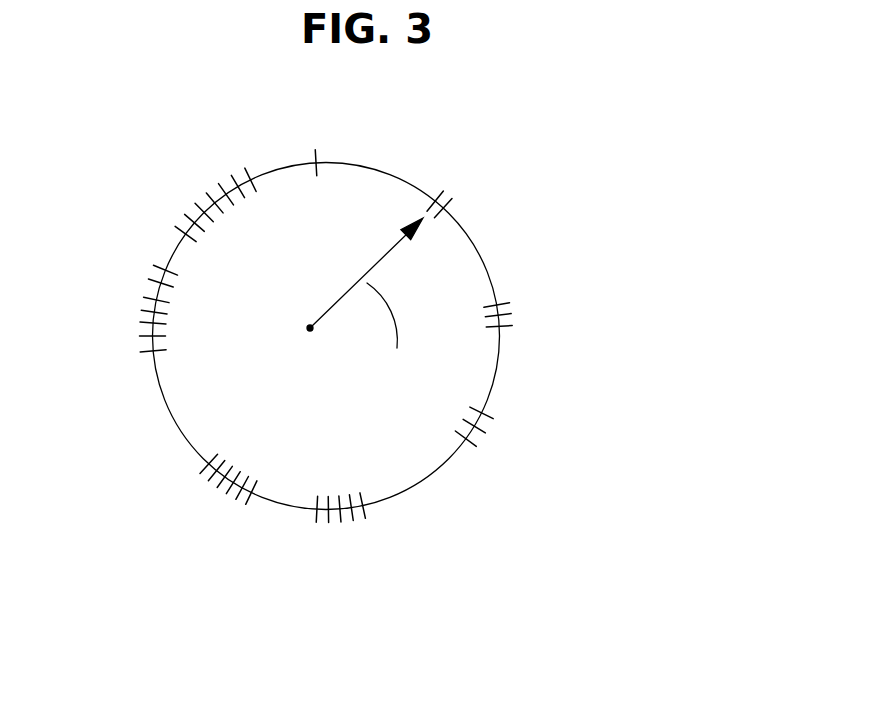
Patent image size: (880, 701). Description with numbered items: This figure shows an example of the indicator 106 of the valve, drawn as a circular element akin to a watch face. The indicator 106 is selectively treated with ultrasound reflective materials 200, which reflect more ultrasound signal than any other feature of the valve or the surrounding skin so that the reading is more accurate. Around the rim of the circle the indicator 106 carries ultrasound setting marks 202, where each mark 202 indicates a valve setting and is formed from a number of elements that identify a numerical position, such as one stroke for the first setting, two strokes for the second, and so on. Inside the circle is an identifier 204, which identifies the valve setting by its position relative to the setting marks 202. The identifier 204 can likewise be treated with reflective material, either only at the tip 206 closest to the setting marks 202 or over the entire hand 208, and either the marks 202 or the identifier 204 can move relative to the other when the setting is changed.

The ultrasound reflective materials 200 is at (628, 211).
The indicator 106 is at (562, 184).
The ultrasound setting marks 202 is at (316, 152).
The identifier 204 is at (391, 330).
The tip 206 is at (423, 213).
The hand 208 is at (347, 293).